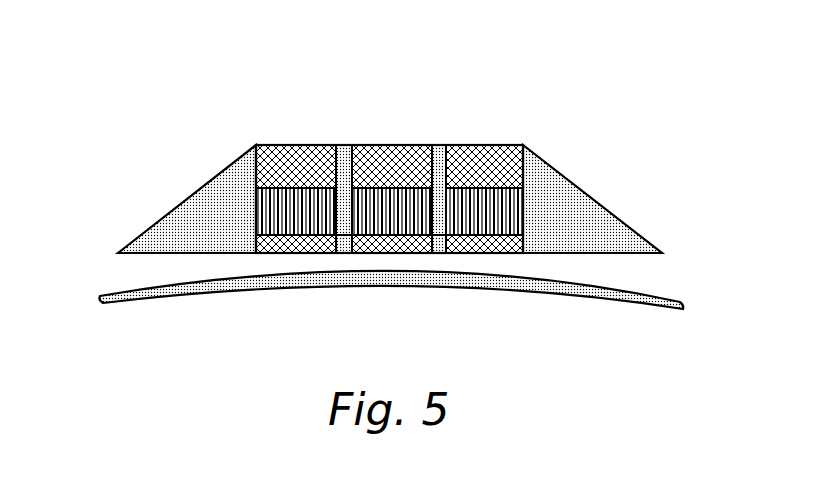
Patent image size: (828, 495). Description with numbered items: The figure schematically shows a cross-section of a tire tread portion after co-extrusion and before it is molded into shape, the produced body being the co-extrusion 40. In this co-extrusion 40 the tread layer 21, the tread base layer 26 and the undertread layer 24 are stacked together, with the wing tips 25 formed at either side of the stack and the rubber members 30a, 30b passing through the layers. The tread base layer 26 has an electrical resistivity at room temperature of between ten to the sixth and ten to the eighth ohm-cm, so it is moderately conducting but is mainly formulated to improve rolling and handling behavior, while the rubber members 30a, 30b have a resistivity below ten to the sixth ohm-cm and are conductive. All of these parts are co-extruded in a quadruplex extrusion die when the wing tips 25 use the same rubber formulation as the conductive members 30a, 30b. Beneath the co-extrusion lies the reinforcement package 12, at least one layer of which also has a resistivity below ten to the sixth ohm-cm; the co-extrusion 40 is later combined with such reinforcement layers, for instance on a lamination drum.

The co-extrusion 40 is at (154, 83).
The wing tips 25 is at (213, 202).
The tread layer 21 is at (300, 150).
The tread base layer 26 is at (483, 218).
The rubber member 30a is at (342, 150).
The rubber member 30b is at (439, 150).
The undertread layer 24 is at (298, 245).
The reinforcement package 12 is at (100, 300).